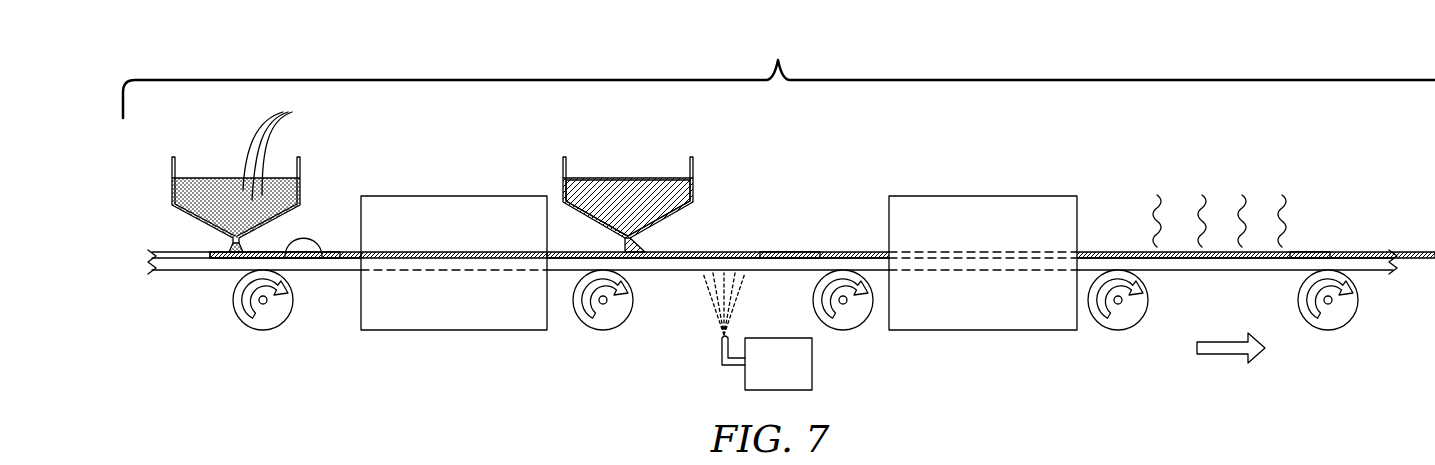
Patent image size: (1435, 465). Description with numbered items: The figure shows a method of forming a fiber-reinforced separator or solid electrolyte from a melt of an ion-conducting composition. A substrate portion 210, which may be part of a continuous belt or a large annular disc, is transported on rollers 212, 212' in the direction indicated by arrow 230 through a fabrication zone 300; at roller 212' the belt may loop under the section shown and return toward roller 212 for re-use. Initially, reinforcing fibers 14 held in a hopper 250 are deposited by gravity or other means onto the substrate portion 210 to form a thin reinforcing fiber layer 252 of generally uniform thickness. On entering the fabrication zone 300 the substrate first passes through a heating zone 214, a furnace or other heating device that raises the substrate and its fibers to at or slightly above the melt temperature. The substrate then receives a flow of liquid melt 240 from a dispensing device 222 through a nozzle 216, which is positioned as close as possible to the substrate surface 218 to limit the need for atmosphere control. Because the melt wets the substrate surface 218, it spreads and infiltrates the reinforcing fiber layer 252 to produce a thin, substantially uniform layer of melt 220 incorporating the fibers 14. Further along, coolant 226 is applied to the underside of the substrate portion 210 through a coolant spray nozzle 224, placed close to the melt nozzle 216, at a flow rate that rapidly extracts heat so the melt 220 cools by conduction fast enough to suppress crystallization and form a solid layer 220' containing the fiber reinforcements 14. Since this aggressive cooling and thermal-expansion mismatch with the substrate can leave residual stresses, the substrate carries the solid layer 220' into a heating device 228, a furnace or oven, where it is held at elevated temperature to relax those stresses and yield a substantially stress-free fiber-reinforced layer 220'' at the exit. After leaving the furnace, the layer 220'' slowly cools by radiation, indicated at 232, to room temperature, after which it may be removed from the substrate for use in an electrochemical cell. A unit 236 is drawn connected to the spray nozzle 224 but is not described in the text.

The fabrication zone 300 is at (778, 60).
The reinforcing fibers 14 is at (152, 313).
The substrate portion 210 is at (162, 252).
The rollers 212 is at (685, 336).
The roller 212' is at (1366, 322).
The heating zone 214 is at (455, 330).
The nozzle 216 is at (630, 238).
The substrate surface 218 is at (323, 252).
The layer of melt 220 is at (822, 207).
The solid layer 220' is at (805, 219).
The stress-free fiber-reinforced layer 220'' is at (1327, 218).
The dispensing device 222 is at (697, 165).
The coolant spray nozzle 224 is at (719, 340).
The coolant 226 is at (710, 298).
The heating device 228 is at (980, 195).
The arrow 230 is at (1208, 334).
The radiation 232 is at (1250, 200).
The supply unit 236 is at (812, 362).
The liquid melt 240 is at (622, 180).
The hopper 250 is at (302, 165).
The reinforcing fiber layer 252 is at (330, 250).